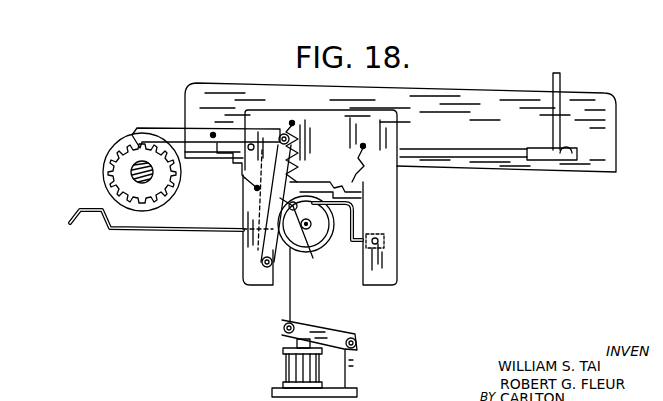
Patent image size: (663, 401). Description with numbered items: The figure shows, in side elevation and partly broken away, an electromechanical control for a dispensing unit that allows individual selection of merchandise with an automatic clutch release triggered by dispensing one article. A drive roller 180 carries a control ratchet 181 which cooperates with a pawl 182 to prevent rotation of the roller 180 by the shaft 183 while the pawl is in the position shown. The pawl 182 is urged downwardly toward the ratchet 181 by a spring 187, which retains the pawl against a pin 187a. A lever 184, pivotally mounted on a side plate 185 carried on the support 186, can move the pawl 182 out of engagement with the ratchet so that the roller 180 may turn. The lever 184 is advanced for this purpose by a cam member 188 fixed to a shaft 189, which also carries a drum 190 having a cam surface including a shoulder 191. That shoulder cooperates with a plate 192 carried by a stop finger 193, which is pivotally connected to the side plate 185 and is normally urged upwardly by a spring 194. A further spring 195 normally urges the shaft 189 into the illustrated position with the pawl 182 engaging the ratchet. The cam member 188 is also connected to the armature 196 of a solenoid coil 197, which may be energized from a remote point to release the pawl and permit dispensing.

The drive roller 180 is at (125, 148).
The control ratchet 181 is at (120, 171).
The pawl 182 is at (178, 127).
The shaft 183 is at (132, 180).
The lever 184 is at (293, 120).
The side plate 185 is at (253, 277).
The support 186 is at (529, 170).
The spring 187 is at (237, 165).
The pin 187a is at (253, 145).
The cam member 188 is at (296, 203).
The shaft 189 is at (308, 226).
The drum 190 is at (328, 238).
The shoulder 191 is at (334, 222).
The plate 192 is at (347, 197).
The stop finger 193 is at (137, 236).
The spring 194 is at (362, 185).
The spring 195 is at (306, 157).
The armature 196 is at (305, 326).
The solenoid coil 197 is at (289, 368).